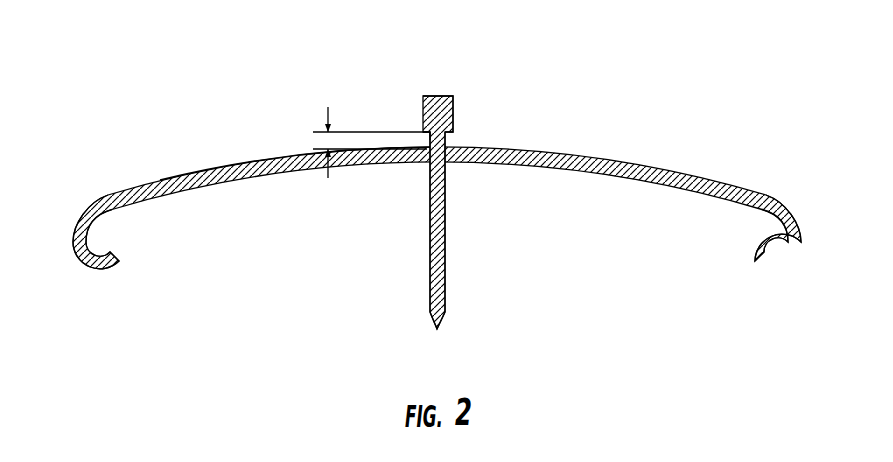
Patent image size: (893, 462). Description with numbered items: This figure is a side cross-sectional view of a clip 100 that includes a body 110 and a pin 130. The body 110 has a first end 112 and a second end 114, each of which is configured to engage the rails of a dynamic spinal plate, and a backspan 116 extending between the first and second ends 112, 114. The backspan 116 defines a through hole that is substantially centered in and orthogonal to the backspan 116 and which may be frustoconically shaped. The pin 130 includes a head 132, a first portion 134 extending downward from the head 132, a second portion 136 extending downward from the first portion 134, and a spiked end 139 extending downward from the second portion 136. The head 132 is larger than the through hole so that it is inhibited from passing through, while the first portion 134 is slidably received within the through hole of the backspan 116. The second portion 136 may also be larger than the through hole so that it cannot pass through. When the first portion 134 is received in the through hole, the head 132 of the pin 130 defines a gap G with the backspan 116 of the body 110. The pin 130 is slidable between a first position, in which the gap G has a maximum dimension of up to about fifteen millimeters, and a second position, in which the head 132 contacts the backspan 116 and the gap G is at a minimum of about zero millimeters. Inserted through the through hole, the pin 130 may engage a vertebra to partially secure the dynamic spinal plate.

The clip 100 is at (600, 90).
The body 110 is at (648, 160).
The first end 112 is at (92, 212).
The second end 114 is at (793, 212).
The backspan 116 is at (248, 160).
The pin 130 is at (460, 112).
The head 132 is at (438, 95).
The first portion 134 is at (428, 137).
The second portion 136 is at (445, 238).
The spiked end 139 is at (437, 332).
The gap G is at (328, 122).